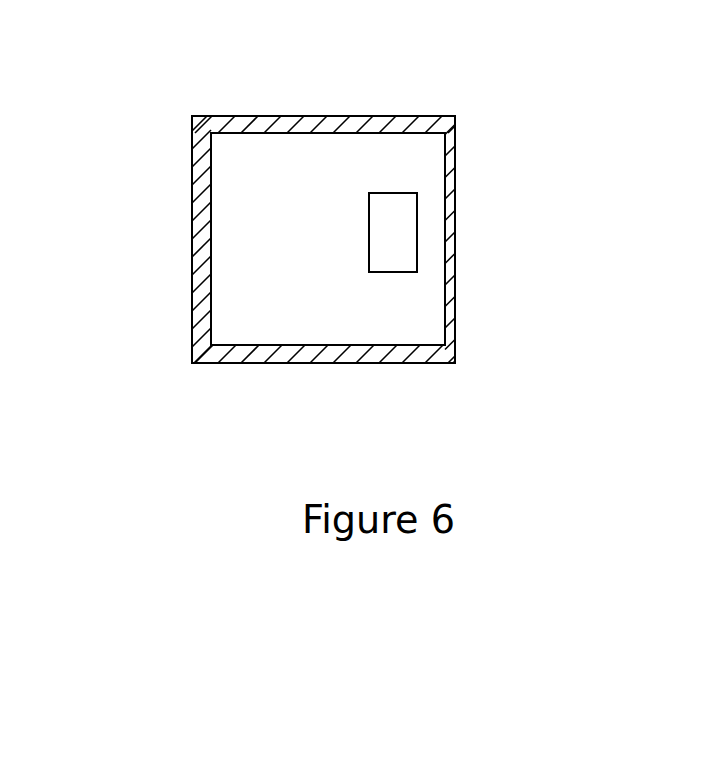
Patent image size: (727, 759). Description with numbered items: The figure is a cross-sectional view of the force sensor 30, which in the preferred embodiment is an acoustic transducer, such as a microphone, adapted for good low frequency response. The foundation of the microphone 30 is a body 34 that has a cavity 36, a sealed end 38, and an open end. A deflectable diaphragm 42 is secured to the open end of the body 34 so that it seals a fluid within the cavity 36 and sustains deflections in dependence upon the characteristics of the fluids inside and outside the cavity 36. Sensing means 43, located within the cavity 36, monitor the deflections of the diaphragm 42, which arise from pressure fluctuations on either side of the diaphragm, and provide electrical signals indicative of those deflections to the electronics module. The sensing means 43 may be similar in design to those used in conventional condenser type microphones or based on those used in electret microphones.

The force sensor 30 is at (323, 185).
The body 34 is at (373, 116).
The cavity 36 is at (308, 293).
The sealed end 38 is at (192, 233).
The deflectable diaphragm 42 is at (455, 205).
The sensing means 43 is at (417, 260).